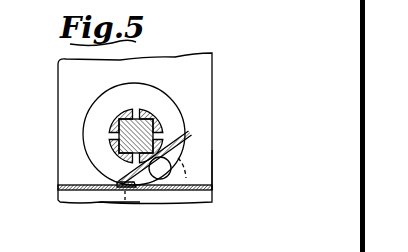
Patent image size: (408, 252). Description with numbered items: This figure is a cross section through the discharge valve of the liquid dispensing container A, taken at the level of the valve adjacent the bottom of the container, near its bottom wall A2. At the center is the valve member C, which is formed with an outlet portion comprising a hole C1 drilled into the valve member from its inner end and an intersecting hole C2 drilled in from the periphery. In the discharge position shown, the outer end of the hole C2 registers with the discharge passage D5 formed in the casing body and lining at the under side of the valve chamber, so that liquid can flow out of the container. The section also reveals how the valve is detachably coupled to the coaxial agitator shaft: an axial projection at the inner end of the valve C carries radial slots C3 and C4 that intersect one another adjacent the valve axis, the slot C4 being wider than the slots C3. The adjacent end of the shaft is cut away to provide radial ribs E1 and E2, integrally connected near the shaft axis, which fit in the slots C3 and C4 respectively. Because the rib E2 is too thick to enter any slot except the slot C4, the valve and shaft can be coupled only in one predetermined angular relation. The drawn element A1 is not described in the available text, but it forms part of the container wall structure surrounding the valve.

The container A is at (57, 73).
The frame bottom portion A1 is at (118, 193).
The bottom wall A2 is at (212, 178).
The discharge valve C is at (92, 105).
The hole C1 is at (167, 174).
The intersecting hole C2 is at (206, 191).
The radial slots C3 is at (109, 132).
The wider radial slot C4 is at (136, 110).
The discharge passage D5 is at (151, 191).
The radial ribs E1 is at (112, 147).
The thick radial rib E2 is at (152, 118).